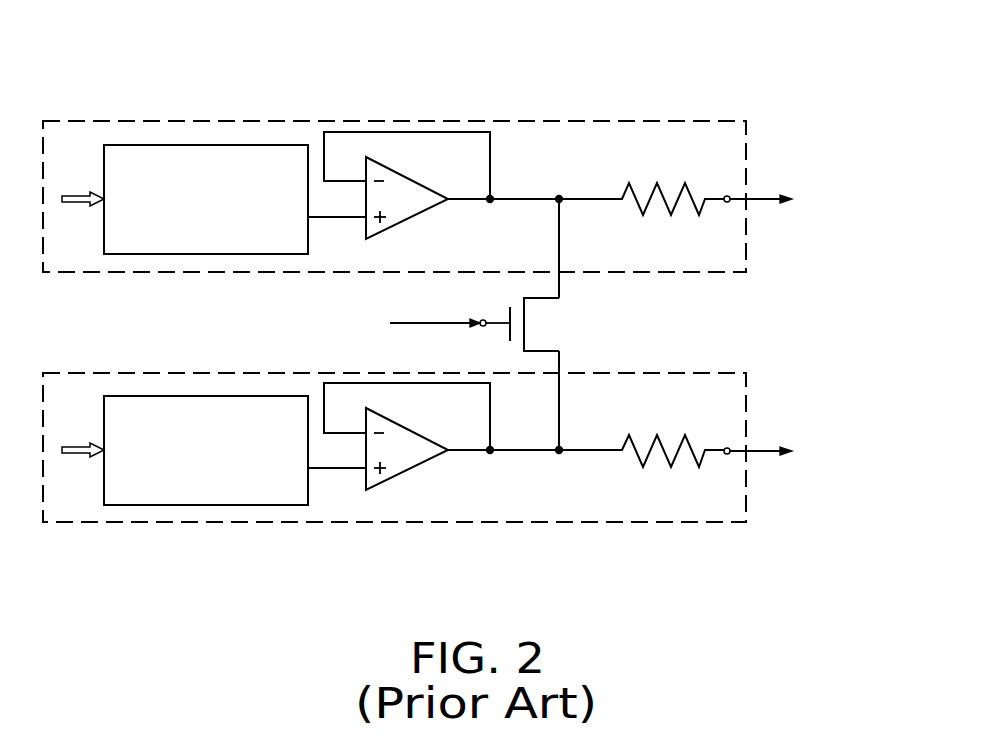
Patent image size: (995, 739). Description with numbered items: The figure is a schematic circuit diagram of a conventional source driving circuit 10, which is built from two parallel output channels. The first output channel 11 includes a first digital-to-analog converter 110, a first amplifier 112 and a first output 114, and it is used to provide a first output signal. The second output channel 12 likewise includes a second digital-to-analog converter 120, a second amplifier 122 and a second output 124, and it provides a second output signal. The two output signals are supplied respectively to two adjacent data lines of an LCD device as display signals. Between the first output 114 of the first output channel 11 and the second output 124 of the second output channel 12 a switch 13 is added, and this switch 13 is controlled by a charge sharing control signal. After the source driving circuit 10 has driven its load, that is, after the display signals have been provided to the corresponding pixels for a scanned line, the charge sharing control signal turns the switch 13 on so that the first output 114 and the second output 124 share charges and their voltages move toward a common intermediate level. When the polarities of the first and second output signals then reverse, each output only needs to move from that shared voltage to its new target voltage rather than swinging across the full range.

The source driving circuit 10 is at (450, 25).
The first output channel 11 is at (558, 120).
The second output channel 12 is at (530, 523).
The switch 13 is at (548, 324).
The first digital-to-analog converter 110 is at (248, 145).
The first amplifier 112 is at (400, 192).
The first output 114 is at (727, 195).
The second digital-to-analog converter 120 is at (236, 505).
The second amplifier 122 is at (402, 458).
The second output 124 is at (727, 455).